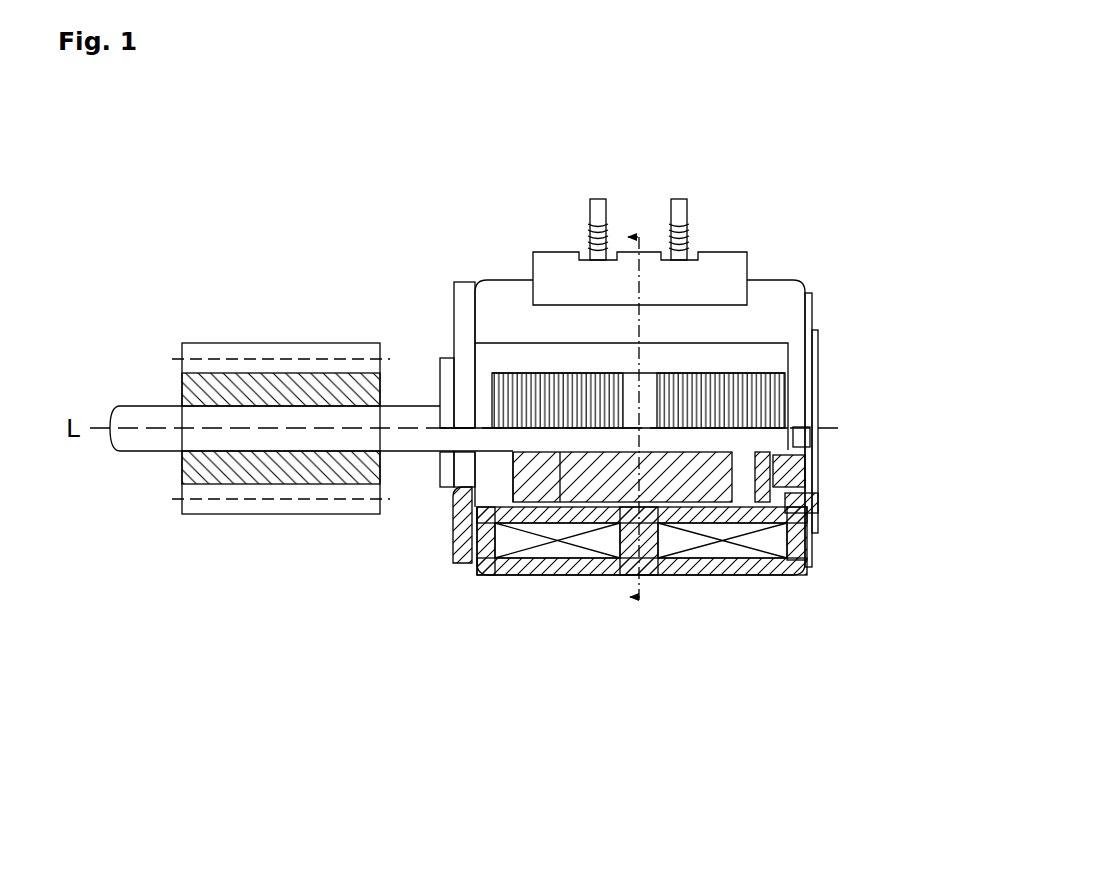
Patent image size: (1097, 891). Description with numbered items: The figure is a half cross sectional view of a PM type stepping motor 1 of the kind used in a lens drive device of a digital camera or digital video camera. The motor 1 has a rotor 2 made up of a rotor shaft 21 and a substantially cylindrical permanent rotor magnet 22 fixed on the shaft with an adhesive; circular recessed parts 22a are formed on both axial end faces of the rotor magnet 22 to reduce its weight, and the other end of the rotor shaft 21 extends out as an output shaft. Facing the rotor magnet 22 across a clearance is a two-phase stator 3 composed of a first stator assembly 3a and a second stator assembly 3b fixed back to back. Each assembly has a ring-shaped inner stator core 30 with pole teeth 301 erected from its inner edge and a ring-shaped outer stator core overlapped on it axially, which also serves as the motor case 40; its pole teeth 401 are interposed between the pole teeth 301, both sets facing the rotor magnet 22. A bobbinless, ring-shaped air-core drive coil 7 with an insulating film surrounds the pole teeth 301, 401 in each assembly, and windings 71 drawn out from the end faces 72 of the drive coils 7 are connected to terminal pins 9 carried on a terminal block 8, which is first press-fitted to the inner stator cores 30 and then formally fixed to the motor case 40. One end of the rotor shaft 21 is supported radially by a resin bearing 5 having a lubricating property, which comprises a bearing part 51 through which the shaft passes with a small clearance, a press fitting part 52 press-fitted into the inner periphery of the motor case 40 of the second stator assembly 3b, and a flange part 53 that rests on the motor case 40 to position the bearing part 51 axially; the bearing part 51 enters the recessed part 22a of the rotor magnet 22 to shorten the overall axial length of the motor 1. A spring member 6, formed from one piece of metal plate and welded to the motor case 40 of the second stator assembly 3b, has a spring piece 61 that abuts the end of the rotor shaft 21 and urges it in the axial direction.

The motor 1 is at (345, 153).
The rotor 2 is at (400, 258).
The rotor shaft 21 is at (335, 420).
The rotor magnet 22 is at (600, 472).
The recessed part 22a is at (517, 468).
The stator 3 is at (692, 698).
The first stator assembly 3a is at (587, 590).
The second stator assembly 3b is at (688, 590).
The inner stator core 30 is at (597, 512).
The pole teeth 301 is at (760, 457).
The pole teeth 401 is at (638, 400).
The motor case 40 is at (500, 295).
The bearing 5 is at (924, 467).
The bearing part 51 is at (772, 460).
The press fitting part 52 is at (792, 498).
The flange part 53 is at (807, 528).
The spring member 6 is at (813, 455).
The spring piece 61 is at (795, 445).
The drive coil 7 is at (478, 575).
The winding 71 is at (587, 235).
The end face 72 is at (590, 545).
The terminal block 8 is at (737, 273).
The terminal pin 9 is at (672, 205).